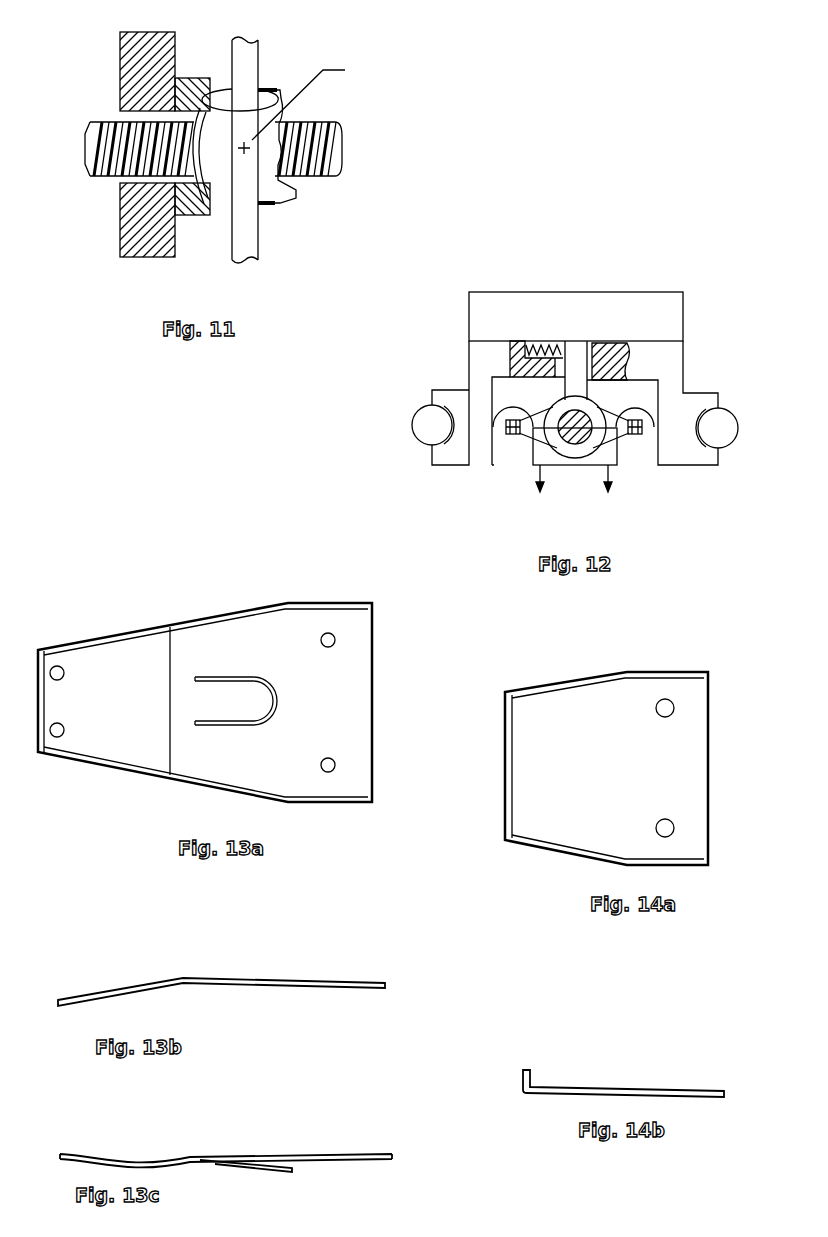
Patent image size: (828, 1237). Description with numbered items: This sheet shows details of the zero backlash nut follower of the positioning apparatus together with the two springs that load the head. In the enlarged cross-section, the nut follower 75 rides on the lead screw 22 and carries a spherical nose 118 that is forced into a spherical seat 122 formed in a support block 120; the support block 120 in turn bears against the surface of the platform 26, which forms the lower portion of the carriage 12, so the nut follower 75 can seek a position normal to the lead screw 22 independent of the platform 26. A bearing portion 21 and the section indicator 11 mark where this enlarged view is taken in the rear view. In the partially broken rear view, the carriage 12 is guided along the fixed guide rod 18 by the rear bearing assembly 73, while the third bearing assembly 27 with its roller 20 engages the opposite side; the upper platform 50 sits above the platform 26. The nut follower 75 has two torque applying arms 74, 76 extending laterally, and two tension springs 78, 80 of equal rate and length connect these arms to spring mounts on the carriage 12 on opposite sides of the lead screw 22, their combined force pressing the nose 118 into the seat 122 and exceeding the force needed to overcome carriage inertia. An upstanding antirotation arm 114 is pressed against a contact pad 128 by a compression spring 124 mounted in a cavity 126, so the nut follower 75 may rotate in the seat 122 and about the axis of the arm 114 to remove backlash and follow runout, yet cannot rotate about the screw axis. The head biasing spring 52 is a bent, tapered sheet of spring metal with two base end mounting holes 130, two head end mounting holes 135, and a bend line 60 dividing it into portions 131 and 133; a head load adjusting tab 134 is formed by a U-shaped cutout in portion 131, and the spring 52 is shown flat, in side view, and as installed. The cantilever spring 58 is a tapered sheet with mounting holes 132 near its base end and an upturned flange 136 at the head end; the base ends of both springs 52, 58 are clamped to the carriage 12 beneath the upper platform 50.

In FIG. 12, the section line 11 is at (574, 490).
In FIG. 12, the carriage 12 is at (718, 467).
In FIG. 12, the fixed guide rod 18 is at (738, 421).
In FIG. 12, the roller 20 is at (423, 450).
In FIG. 11, the bearing housing 21 is at (266, 212).
In FIG. 11, the lead screw 22 is at (112, 178).
In FIG. 12, the lead screw 22 is at (547, 357).
In FIG. 11, the platform 26 is at (147, 257).
In FIG. 12, the platform 26 is at (683, 359).
In FIG. 12, the third bearing assembly 27 is at (454, 387).
In FIG. 12, the upper platform 50 is at (683, 306).
In FIG. 13A, the head biasing spring 52 is at (372, 708).
In FIG. 13B, the head biasing spring 52 is at (355, 982).
In FIG. 13C, the head biasing spring 52 is at (362, 1155).
In FIG. 14A, the cantilever spring 58 is at (708, 707).
In FIG. 14B, the cantilever spring 58 is at (724, 1091).
In FIG. 13A, the bend line 60 is at (172, 652).
In FIG. 13B, the bend line 60 is at (183, 980).
In FIG. 13C, the bend line 60 is at (190, 1157).
In FIG. 12, the rear bearing assembly 73 is at (718, 394).
In FIG. 12, the torque applying arm 74 is at (513, 440).
In FIG. 11, the nut follower 75 is at (302, 186).
In FIG. 12, the nut follower 75 is at (527, 377).
In FIG. 12, the torque applying arm 76 is at (635, 440).
In FIG. 12, the tension spring 78 is at (527, 440).
In FIG. 12, the tension spring 80 is at (620, 440).
In FIG. 12, the antirotation arm 114 is at (577, 357).
In FIG. 11, the spherical nose 118 is at (222, 86).
In FIG. 11, the support block 120 is at (192, 216).
In FIG. 11, the spherical seat 122 is at (273, 92).
In FIG. 12, the compression spring 124 is at (557, 350).
In FIG. 12, the cavity 126 is at (538, 341).
In FIG. 12, the contact pad 128 is at (593, 363).
In FIG. 13A, the base end mounting holes 130 is at (331, 758).
In FIG. 13A, the spring portion 131 is at (267, 774).
In FIG. 14A, the mounting holes 132 is at (674, 822).
In FIG. 13A, the spring portion 133 is at (103, 742).
In FIG. 13A, the head load adjusting tab 134 is at (233, 720).
In FIG. 13C, the head load adjusting tab 134 is at (292, 1170).
In FIG. 13A, the head end mounting holes 135 is at (60, 722).
In FIG. 14A, the upturned flange 136 is at (512, 725).
In FIG. 14B, the upturned flange 136 is at (530, 1076).